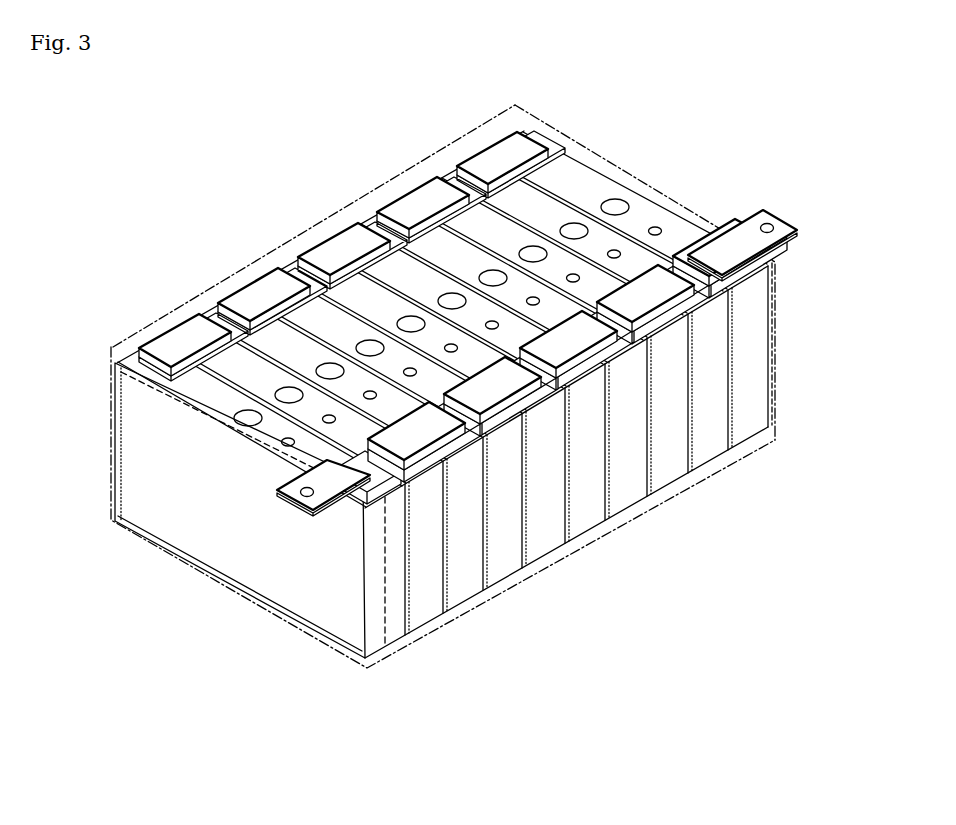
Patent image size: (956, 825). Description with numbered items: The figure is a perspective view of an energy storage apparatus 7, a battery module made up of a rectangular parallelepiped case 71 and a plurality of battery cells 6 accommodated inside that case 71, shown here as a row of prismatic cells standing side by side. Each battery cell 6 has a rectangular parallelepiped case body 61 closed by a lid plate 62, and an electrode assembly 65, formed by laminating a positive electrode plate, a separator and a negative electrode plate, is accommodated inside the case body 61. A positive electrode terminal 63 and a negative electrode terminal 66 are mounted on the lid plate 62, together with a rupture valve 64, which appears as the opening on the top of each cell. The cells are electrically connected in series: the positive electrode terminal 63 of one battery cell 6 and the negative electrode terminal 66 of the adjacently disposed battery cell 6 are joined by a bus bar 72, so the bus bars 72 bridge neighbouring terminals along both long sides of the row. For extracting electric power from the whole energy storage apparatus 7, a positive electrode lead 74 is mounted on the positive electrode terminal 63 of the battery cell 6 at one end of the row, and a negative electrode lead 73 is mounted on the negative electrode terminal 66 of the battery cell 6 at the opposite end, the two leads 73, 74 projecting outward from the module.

The energy storage apparatus 7 is at (775, 117).
The case 71 is at (652, 187).
The positive electrode lead 74 is at (763, 213).
The positive electrode terminal 63 is at (137, 352).
The bus bar 72 is at (178, 334).
The negative electrode terminal 66 is at (202, 332).
The case body 61 is at (126, 442).
The lid plate 62 is at (208, 406).
The rupture valve 64 is at (247, 419).
The negative electrode lead 73 is at (293, 505).
The electrode assembly 65 is at (303, 623).
The battery cell 6 is at (390, 600).